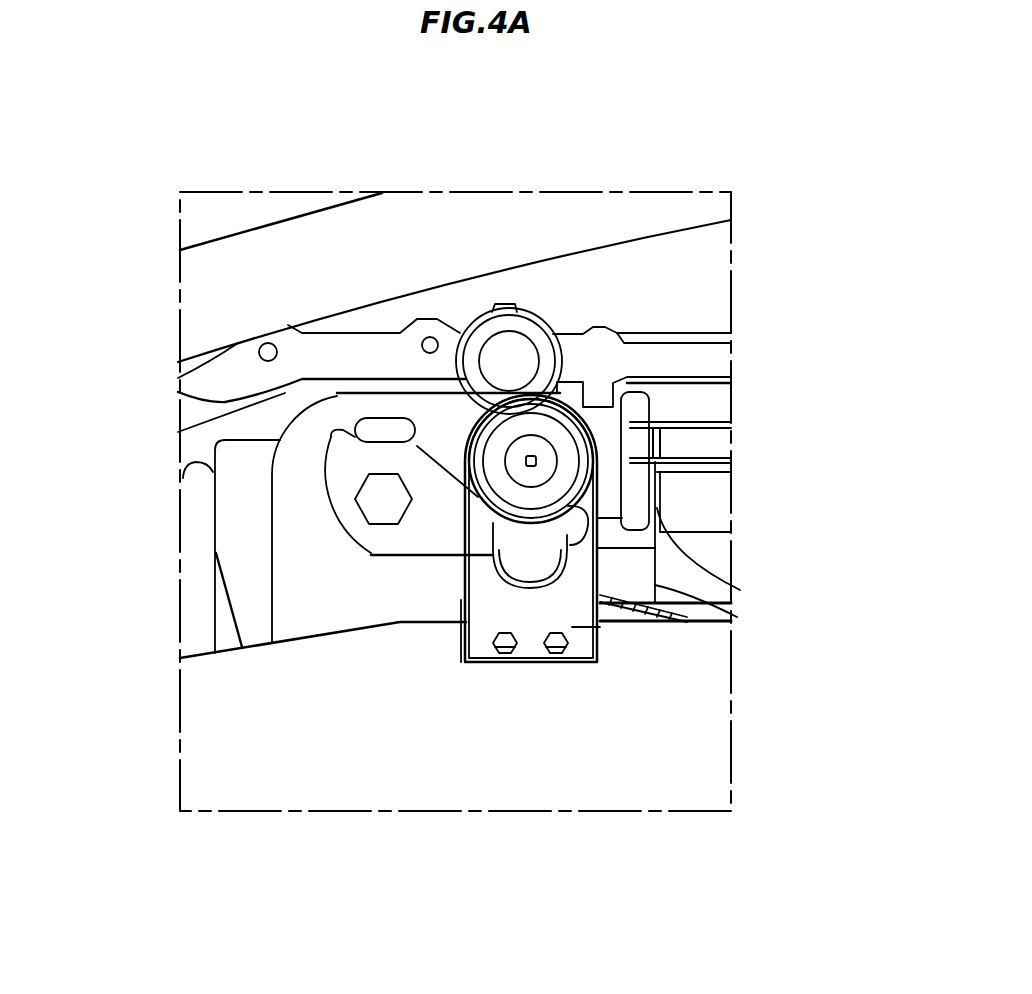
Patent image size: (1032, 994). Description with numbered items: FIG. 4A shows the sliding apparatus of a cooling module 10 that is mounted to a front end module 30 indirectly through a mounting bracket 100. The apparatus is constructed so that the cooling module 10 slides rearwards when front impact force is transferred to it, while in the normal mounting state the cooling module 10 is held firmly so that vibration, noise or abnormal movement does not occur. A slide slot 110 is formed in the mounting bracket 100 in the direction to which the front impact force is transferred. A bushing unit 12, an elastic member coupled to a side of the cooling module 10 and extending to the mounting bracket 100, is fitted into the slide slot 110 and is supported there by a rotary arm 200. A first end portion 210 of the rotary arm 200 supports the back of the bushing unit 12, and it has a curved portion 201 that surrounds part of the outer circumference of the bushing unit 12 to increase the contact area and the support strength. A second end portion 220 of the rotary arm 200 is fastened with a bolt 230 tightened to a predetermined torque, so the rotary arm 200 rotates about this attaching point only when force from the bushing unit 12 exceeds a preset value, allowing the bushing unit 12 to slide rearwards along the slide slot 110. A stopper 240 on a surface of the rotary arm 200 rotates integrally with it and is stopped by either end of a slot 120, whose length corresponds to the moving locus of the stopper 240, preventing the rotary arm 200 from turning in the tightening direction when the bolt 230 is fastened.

The cooling module 10 is at (690, 447).
The bushing unit 12 is at (533, 423).
The front end module 30 is at (477, 778).
The mounting bracket 100 is at (433, 413).
The slide slot 110 is at (690, 603).
The slot 120 is at (380, 427).
The rotary arm 200 is at (435, 543).
The curved portion 201 is at (520, 508).
The first end portion 210 is at (600, 583).
The second end portion 220 is at (357, 502).
The bolt 230 is at (357, 501).
The stopper 240 is at (178, 391).